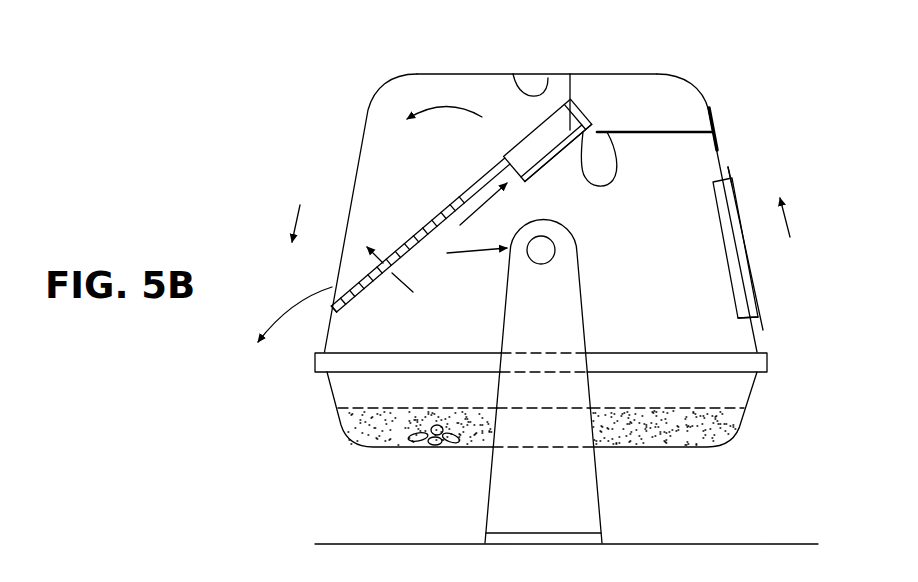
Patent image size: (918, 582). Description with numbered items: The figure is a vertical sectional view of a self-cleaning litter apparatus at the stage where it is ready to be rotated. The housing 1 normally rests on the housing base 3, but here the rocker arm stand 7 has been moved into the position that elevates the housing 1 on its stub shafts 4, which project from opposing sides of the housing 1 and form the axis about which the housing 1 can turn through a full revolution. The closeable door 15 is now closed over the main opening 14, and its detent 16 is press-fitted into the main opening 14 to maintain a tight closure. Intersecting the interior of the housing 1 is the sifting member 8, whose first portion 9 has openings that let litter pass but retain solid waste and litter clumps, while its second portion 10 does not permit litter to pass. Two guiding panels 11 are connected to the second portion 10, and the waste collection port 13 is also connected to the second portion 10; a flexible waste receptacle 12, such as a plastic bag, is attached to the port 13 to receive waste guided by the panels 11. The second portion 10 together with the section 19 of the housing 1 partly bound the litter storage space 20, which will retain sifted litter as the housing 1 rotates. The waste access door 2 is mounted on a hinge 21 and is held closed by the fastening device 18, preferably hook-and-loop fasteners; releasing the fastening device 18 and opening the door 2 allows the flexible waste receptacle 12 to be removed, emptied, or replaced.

The housing 1 is at (362, 143).
The waste access door 2 is at (643, 74).
The housing base 3 is at (365, 447).
The stub shafts 4 is at (555, 250).
The rocker arm stand 7 is at (600, 505).
The sifting member 8 is at (450, 203).
The first portion 9 is at (345, 303).
The second portion 10 is at (497, 160).
The guiding panels 11 is at (527, 183).
The flexible waste receptacle 12 is at (618, 170).
The waste collection port 13 is at (587, 110).
The main opening 14 is at (737, 300).
The closeable door 15 is at (750, 270).
The detent 16 is at (733, 190).
The fastening device 18 is at (713, 132).
The section of housing 19 is at (463, 74).
The litter storage space 20 is at (538, 112).
The hinge 21 is at (570, 74).